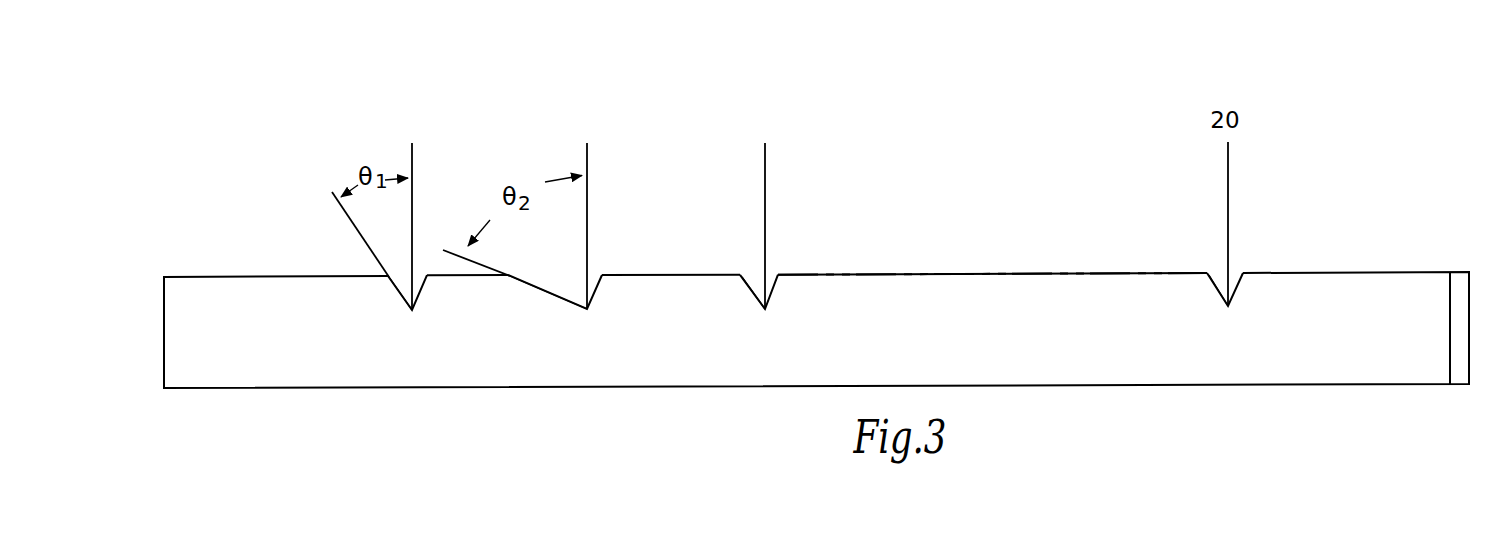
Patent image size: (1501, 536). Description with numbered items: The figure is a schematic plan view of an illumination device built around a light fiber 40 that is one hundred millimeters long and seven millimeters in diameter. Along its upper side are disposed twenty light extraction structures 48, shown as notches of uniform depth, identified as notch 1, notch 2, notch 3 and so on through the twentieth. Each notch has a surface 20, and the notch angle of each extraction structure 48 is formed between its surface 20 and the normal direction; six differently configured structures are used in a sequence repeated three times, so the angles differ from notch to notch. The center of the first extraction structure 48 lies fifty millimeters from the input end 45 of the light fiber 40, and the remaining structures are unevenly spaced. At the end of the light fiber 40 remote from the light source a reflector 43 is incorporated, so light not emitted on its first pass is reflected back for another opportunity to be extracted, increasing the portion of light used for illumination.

The light fiber 40 is at (237, 290).
The input end 45 is at (163, 287).
The reflector 43 is at (1459, 287).
The surface 20 is at (402, 297).
The light extraction structure 48 is at (1220, 278).
The notch 1 marker 1 is at (410, 194).
The notch 2 marker 2 is at (585, 210).
The notch 3 marker 3 is at (764, 210).